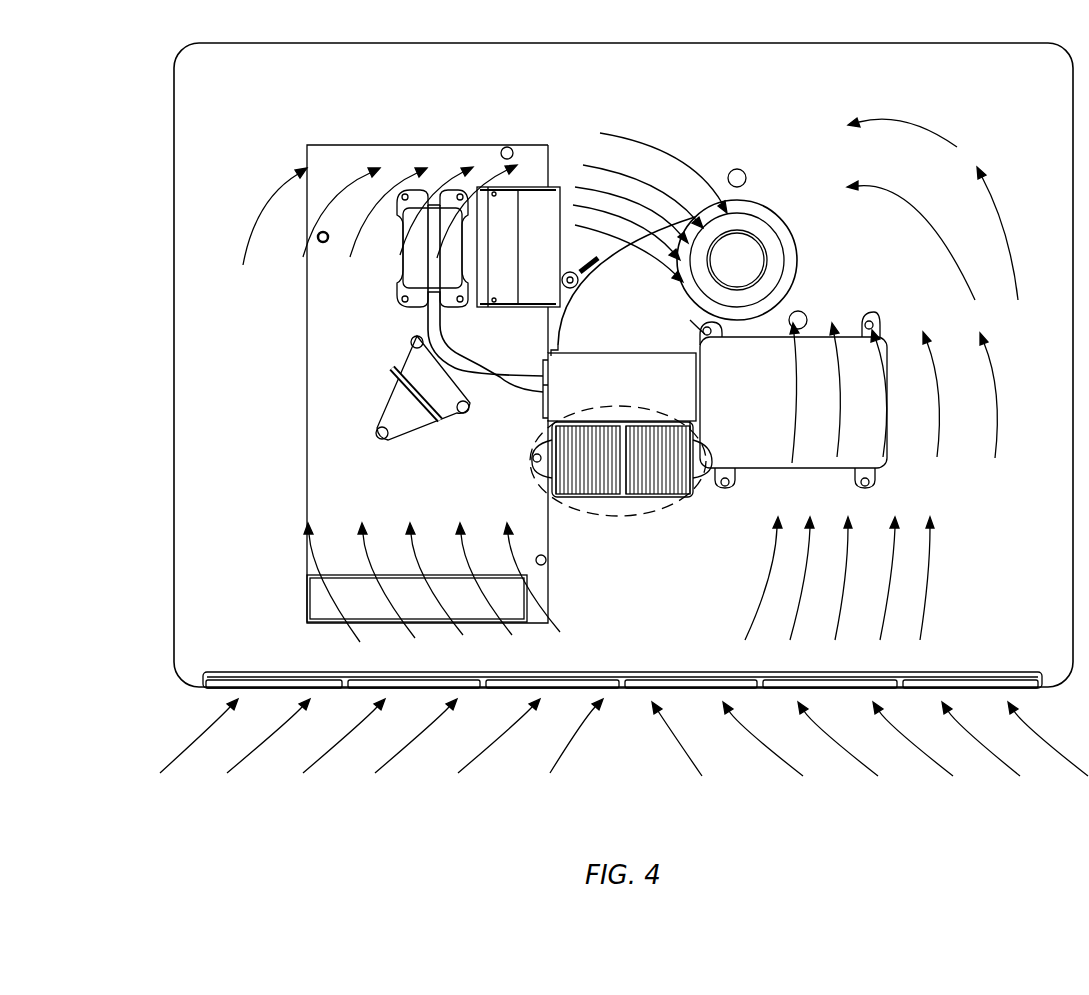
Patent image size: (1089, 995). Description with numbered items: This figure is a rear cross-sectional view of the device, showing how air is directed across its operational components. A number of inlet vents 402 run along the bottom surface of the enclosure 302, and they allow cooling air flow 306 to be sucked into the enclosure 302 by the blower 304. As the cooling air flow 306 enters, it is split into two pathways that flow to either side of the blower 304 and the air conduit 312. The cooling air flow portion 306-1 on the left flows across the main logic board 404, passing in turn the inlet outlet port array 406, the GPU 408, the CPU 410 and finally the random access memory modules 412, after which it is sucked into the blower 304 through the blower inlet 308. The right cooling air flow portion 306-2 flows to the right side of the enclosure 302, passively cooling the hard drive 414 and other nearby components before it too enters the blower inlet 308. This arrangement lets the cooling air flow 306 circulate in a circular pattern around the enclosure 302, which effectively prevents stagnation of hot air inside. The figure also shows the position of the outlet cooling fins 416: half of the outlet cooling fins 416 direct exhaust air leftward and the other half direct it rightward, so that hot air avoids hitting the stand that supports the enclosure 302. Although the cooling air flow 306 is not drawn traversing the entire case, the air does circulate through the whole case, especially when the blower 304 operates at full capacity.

The enclosure 302 is at (1035, 81).
The blower 304 is at (786, 204).
The cooling air flow 306 is at (624, 738).
The cooling air flow portion 306-1 is at (485, 387).
The right cooling air flow portion 306-2 is at (881, 379).
The blower inlet 308 is at (776, 250).
The air conduit 312 is at (600, 398).
The inlet vents 402 is at (920, 686).
The main logic board 404 is at (345, 170).
The inlet outlet port array 406 is at (373, 610).
The GPU 408 is at (375, 415).
The CPU 410 is at (400, 275).
The random access memory modules 412 is at (556, 192).
The hard drive 414 is at (748, 462).
The outlet cooling fins 416 is at (714, 464).